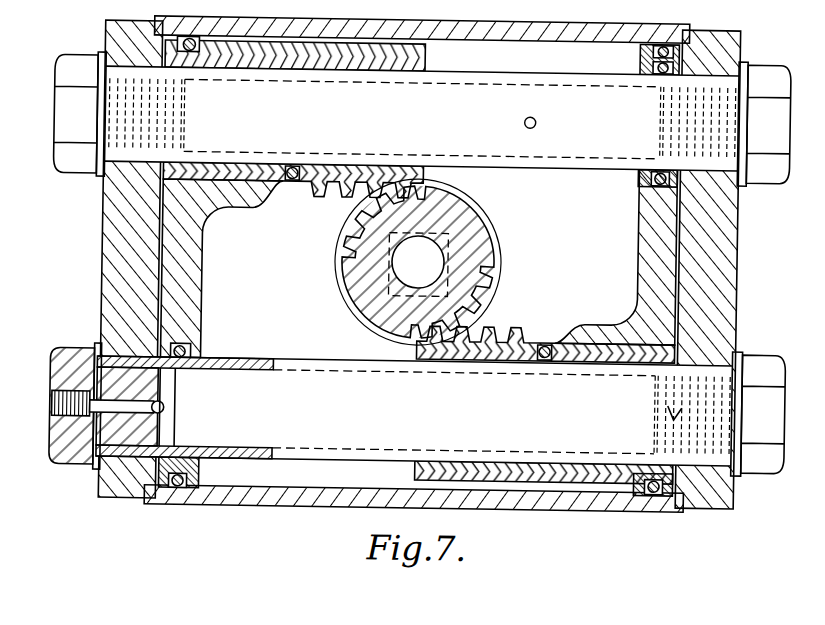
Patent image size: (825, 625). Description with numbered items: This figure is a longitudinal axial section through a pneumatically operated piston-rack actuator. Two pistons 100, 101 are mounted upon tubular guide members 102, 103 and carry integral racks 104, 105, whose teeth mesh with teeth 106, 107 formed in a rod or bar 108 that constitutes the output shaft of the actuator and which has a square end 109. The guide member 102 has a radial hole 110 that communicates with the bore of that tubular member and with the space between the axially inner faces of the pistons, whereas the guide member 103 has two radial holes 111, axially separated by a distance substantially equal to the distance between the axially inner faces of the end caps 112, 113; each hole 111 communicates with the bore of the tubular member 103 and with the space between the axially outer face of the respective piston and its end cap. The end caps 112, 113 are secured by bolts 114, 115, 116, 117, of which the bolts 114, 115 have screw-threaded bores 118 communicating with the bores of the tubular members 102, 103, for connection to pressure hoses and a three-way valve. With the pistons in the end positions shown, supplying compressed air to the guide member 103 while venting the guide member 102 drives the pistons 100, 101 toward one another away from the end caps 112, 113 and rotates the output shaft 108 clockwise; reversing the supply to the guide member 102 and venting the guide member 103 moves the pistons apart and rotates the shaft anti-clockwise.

The piston 100 is at (194, 308).
The piston 101 is at (647, 217).
The tubular guide member 102 is at (607, 71).
The tubular guide member 103 is at (375, 459).
The rack 104 is at (324, 194).
The rack 105 is at (523, 326).
The teeth 106 is at (345, 235).
The teeth 107 is at (493, 283).
The rod or bar 108 is at (359, 294).
The square end 109 is at (480, 230).
The radial hole 110 is at (534, 117).
The radial holes 111 is at (170, 405).
The end cap 112 is at (107, 253).
The end cap 113 is at (735, 274).
The bolt 114 is at (70, 66).
The bolt 115 is at (68, 352).
The bolt 116 is at (763, 66).
The bolt 117 is at (762, 354).
The screw-threaded bore 118 is at (57, 409).